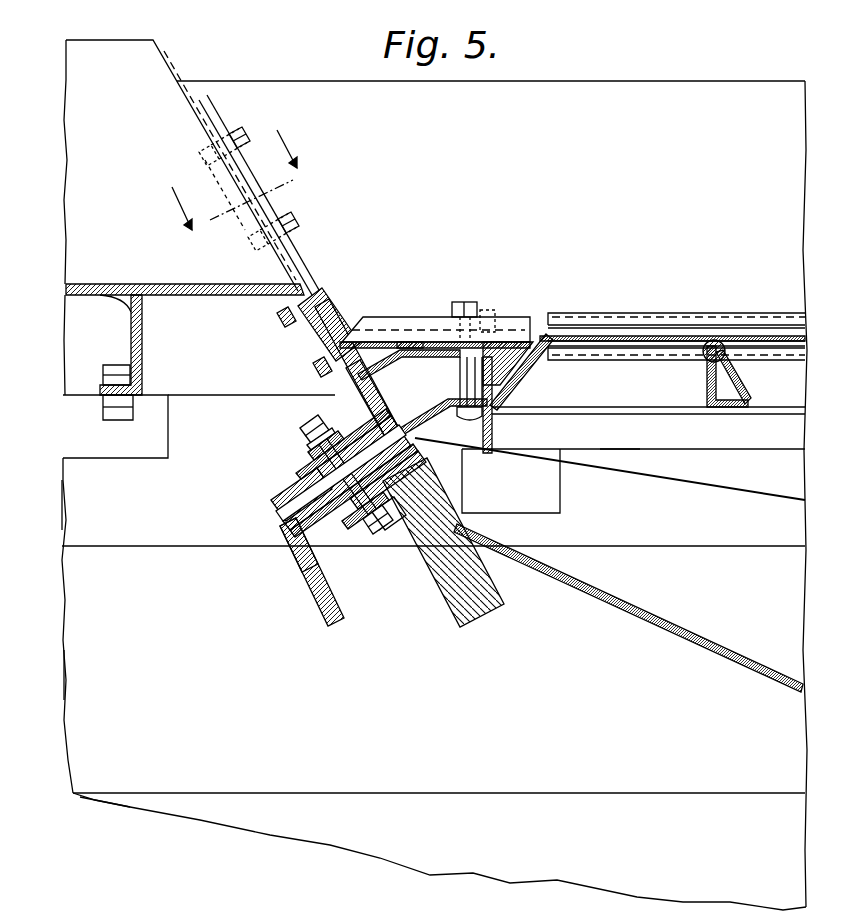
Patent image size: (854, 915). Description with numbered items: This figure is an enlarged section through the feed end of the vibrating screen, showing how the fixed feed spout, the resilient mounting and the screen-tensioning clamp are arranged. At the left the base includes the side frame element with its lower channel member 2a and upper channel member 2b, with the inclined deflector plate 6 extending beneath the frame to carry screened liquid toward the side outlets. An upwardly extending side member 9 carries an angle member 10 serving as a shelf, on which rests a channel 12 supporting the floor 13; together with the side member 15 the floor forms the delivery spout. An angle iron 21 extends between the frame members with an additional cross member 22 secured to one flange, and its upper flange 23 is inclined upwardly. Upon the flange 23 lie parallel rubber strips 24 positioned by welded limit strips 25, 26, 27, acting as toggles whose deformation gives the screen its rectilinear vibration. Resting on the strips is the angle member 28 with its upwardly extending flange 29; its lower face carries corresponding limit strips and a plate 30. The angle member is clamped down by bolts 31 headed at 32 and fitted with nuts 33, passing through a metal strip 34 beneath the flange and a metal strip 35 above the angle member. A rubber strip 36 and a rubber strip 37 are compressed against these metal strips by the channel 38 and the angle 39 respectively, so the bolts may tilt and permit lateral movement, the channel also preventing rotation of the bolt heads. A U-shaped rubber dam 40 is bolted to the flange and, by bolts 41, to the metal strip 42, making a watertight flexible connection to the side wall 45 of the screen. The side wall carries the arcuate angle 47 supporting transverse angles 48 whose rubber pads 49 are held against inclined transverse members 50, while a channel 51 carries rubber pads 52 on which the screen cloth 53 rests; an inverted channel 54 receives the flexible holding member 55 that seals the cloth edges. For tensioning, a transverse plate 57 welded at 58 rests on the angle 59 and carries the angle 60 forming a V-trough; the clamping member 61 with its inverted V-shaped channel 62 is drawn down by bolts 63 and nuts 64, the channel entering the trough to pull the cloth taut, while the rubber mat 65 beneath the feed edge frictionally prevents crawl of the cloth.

The lower channel member 2a is at (100, 818).
The upper channel member 2b is at (76, 672).
The deflector plate 6 is at (680, 670).
The side member 9 is at (72, 500).
The angle member 10 is at (78, 420).
The channel 12 is at (130, 328).
The floor 13 is at (190, 296).
The side member 15 is at (74, 93).
The angle iron 21 is at (323, 600).
The cross member 22 is at (460, 602).
The upper flange 23 is at (425, 470).
The rubber strips 24 is at (282, 513).
The limit strip 25 is at (283, 512).
The limit strip 26 is at (300, 474).
The limit strip 27 is at (410, 462).
The angle member 28 is at (275, 492).
The upwardly extending flange 29 is at (362, 384).
The plate 30 is at (424, 418).
The bolts 31 is at (308, 418).
The bolt heads 32 is at (383, 538).
The nuts 33 is at (308, 436).
The metal strip 34 is at (353, 537).
The metal strip 35 is at (312, 450).
The rubber strip 36 is at (307, 457).
The rubber strip 37 is at (295, 565).
The channel 38 is at (367, 545).
The angle 39 is at (365, 405).
The rubber dam 40 is at (213, 143).
The bolts 41 is at (205, 178).
The metal strip 42 is at (285, 253).
The side wall 45 is at (296, 95).
The inwardly extending angle 47 is at (663, 437).
The transverse angle 48 is at (707, 383).
The rubber pad 49 is at (716, 340).
The inclined transverse member 50 is at (742, 385).
The channel 51 is at (652, 360).
The rubber pad 52 is at (626, 348).
The screen cloth 53 is at (653, 336).
The inverted channel 54 is at (608, 312).
The flexible holding member 55 is at (574, 330).
The transverse plate 57 is at (418, 341).
The weld 58 is at (366, 366).
The angle 59 is at (460, 374).
The angle 60 is at (530, 367).
The clamping member 61 is at (432, 330).
The inverted V-shaped channel 62 is at (513, 348).
The bolts 63 is at (468, 302).
The nuts 64 is at (484, 318).
The rubber mat 65 is at (440, 341).